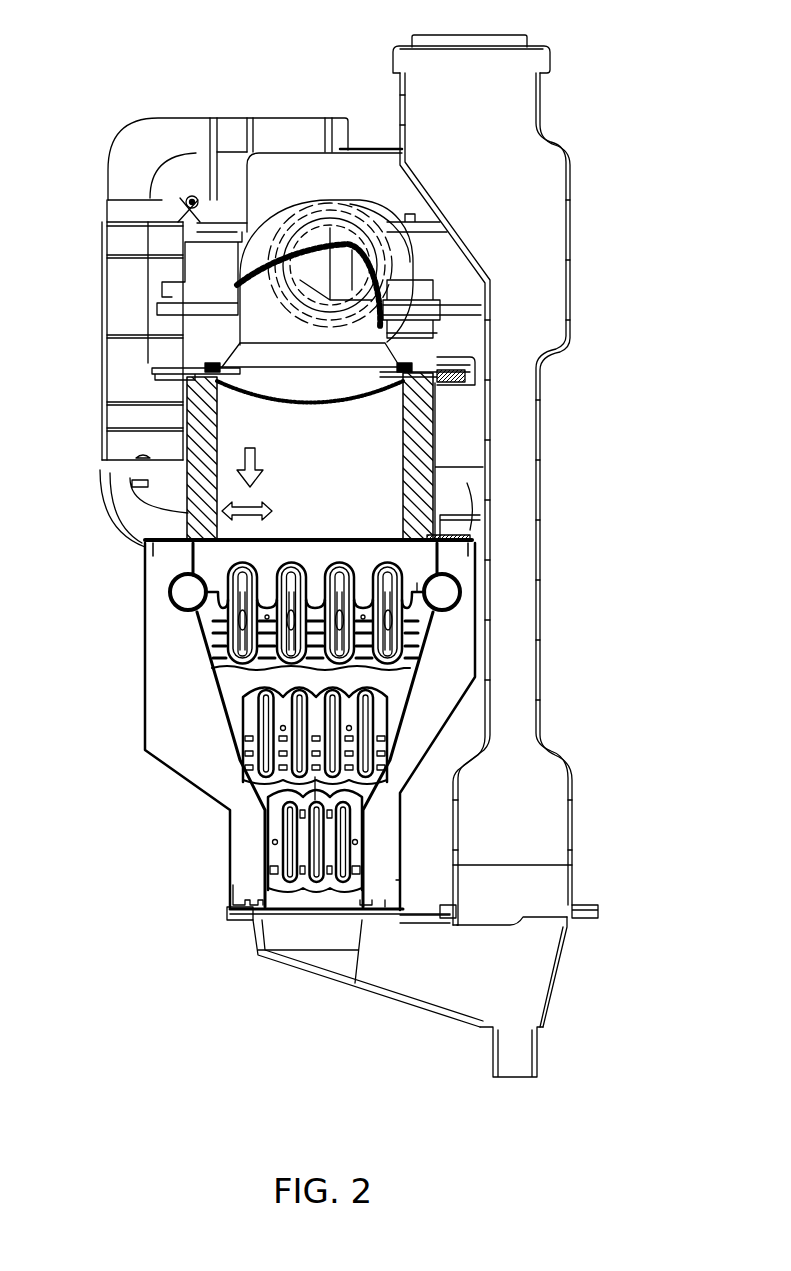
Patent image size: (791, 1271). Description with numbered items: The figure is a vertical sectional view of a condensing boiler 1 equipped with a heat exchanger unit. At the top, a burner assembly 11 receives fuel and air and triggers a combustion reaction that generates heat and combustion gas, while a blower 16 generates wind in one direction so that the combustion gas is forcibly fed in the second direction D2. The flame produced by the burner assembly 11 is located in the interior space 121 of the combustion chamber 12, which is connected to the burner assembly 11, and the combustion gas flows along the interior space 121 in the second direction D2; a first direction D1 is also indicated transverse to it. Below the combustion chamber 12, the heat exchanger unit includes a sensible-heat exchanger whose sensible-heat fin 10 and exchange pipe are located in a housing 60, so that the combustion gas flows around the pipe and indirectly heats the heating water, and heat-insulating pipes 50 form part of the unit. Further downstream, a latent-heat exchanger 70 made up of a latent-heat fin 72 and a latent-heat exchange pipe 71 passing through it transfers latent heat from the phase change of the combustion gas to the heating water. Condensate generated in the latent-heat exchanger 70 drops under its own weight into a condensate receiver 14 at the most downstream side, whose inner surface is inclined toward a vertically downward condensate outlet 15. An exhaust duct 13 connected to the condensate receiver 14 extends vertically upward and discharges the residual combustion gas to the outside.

The condensing boiler 1 is at (289, 1055).
The sensible-heat fin 10 is at (246, 682).
The burner assembly 11 is at (228, 323).
The combustion chamber 12 is at (455, 406).
The interior space 121 is at (372, 492).
The exhaust duct 13 is at (572, 820).
The condensate receiver 14 is at (433, 1020).
The condensate outlet 15 is at (537, 1055).
The blower 16 is at (370, 150).
The heat-insulating pipe 50 is at (170, 587).
The housing 60 is at (222, 677).
The latent-heat exchanger 70 is at (130, 852).
The latent-heat exchange pipe 71 is at (282, 822).
The latent-heat fin 72 is at (270, 883).
The first direction D1 is at (265, 522).
The second direction D2 is at (260, 458).